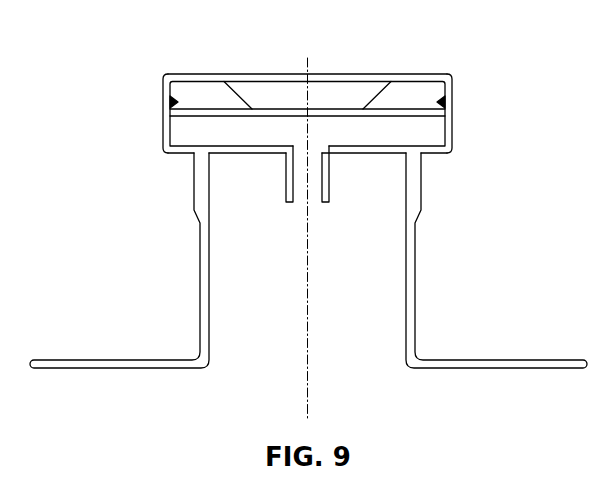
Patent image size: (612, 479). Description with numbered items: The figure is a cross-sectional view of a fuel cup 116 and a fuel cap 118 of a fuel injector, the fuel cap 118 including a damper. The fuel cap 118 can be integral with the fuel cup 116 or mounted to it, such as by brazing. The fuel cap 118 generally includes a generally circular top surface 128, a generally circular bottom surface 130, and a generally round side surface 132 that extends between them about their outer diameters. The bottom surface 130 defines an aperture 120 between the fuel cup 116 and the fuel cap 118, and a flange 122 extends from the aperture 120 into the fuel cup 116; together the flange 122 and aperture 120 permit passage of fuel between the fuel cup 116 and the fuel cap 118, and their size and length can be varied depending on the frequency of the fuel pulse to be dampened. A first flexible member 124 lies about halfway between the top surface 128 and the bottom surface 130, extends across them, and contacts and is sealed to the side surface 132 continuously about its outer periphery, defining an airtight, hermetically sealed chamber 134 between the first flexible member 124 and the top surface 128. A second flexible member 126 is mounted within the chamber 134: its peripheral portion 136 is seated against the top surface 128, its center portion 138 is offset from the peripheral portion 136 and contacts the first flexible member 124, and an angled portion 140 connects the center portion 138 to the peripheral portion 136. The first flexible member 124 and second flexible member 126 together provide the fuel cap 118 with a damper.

The fuel cup 116 is at (415, 318).
The fuel cap 118 is at (455, 116).
The aperture 120 is at (323, 172).
The flange 122 is at (285, 185).
The first flexible member 124 is at (430, 155).
The second flexible member 126 is at (381, 90).
The top surface 128 is at (262, 73).
The bottom surface 130 is at (366, 157).
The side surface 132 is at (162, 122).
The chamber 134 is at (187, 93).
The peripheral portion 136 is at (415, 88).
The center portion 138 is at (317, 93).
The angled portion 140 is at (242, 84).